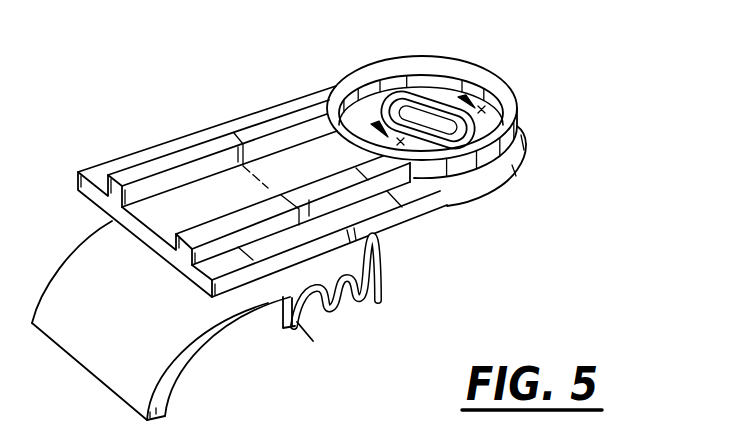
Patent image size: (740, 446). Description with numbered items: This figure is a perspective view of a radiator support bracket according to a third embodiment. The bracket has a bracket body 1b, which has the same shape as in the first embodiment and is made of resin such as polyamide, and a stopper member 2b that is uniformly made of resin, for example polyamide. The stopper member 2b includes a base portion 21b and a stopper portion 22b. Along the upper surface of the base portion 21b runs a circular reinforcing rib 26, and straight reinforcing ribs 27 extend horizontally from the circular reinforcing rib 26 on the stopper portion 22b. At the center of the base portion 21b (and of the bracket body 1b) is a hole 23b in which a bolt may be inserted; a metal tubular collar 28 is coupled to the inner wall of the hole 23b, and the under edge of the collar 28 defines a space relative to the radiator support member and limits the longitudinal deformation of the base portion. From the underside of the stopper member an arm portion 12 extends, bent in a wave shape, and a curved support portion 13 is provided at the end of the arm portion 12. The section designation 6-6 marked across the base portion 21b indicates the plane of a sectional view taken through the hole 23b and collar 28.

The bracket body 1b is at (340, 333).
The stopper member 2b is at (286, 79).
The base portion 21b is at (362, 105).
The stopper portion 22b is at (166, 197).
The hole 23b is at (417, 112).
The circular reinforcing rib 26 is at (393, 66).
The straight reinforcing ribs 27 is at (232, 137).
The metal tubular collar 28 is at (517, 103).
The arm portion 12 is at (379, 299).
The curved support portion 13 is at (213, 343).
The section line 6-6 is at (485, 186).